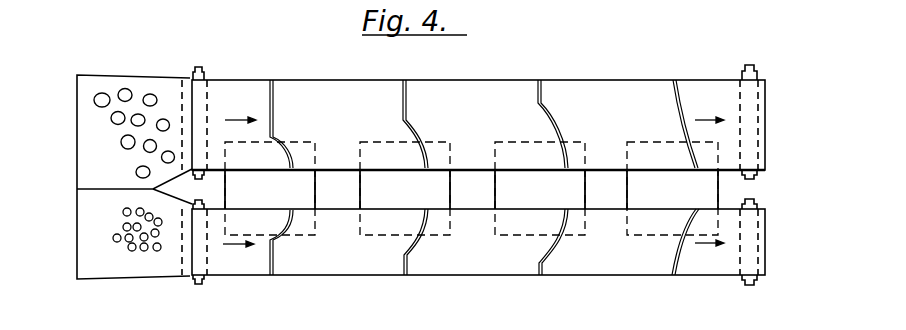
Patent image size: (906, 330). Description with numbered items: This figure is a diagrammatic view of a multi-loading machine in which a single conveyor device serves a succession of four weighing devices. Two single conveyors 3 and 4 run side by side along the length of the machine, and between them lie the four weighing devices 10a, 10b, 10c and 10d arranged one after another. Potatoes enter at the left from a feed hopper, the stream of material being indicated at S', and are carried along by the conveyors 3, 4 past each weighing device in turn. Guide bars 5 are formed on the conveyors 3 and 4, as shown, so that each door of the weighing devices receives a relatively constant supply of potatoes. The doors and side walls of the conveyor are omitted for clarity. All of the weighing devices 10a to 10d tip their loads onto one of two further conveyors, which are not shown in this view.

The conveyor 3 is at (345, 123).
The conveyor 4 is at (348, 267).
The guide bars 5 is at (406, 112).
The weighing device 10a is at (282, 204).
The weighing device 10b is at (416, 204).
The weighing device 10c is at (548, 204).
The weighing device 10d is at (684, 204).
The material stream S' is at (58, 177).